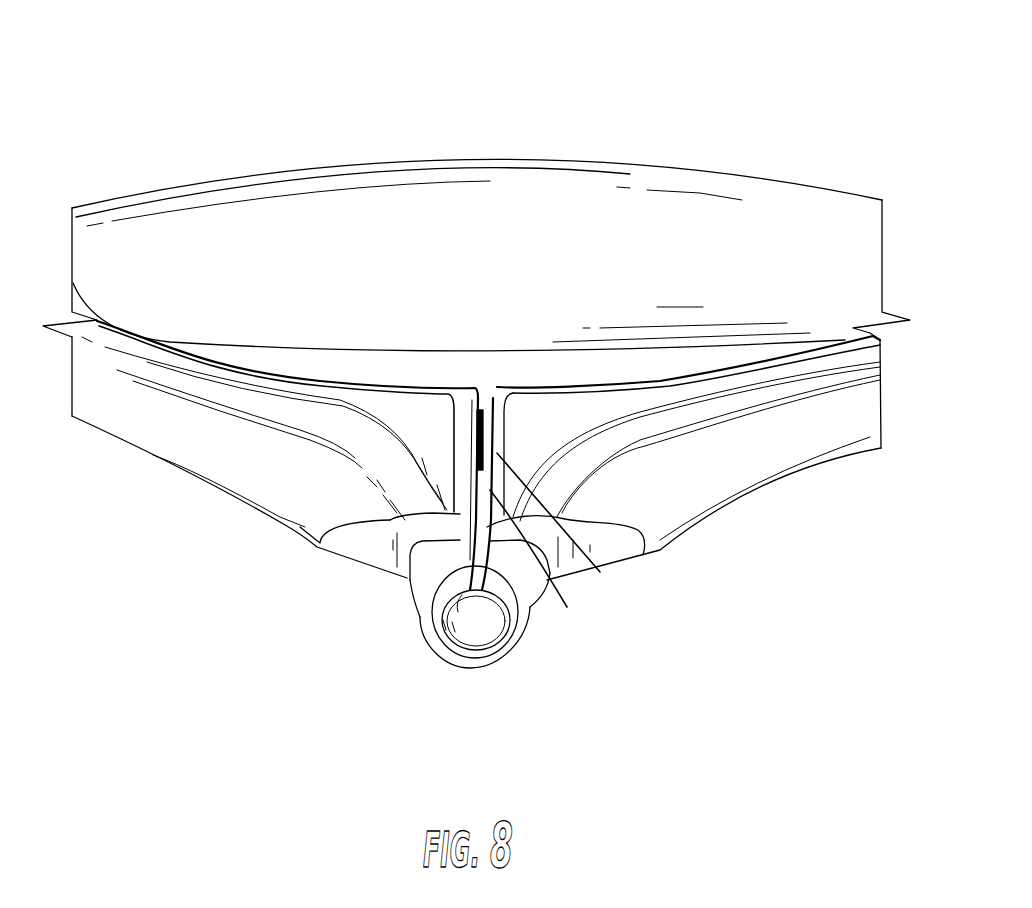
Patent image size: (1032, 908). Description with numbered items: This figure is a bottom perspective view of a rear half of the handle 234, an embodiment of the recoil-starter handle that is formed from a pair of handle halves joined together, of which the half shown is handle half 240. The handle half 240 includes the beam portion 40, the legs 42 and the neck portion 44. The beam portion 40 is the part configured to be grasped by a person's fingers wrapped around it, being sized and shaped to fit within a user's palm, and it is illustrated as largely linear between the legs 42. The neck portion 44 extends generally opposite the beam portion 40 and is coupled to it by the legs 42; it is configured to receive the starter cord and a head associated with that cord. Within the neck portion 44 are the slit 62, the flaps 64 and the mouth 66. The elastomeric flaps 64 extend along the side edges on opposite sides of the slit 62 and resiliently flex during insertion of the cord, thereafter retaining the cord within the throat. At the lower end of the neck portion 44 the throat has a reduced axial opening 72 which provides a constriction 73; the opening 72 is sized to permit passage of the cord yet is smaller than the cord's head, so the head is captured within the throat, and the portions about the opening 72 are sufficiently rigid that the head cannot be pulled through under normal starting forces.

The handle 234 is at (228, 104).
The handle half 240 is at (313, 156).
The beam portion 40 is at (610, 162).
The legs 42 is at (150, 458).
The neck portion 44 is at (305, 560).
The slit 62 is at (600, 572).
The flaps 64 is at (567, 607).
The mouth 66 is at (486, 412).
The reduced axial opening 72 is at (477, 647).
The constriction 73 is at (487, 597).